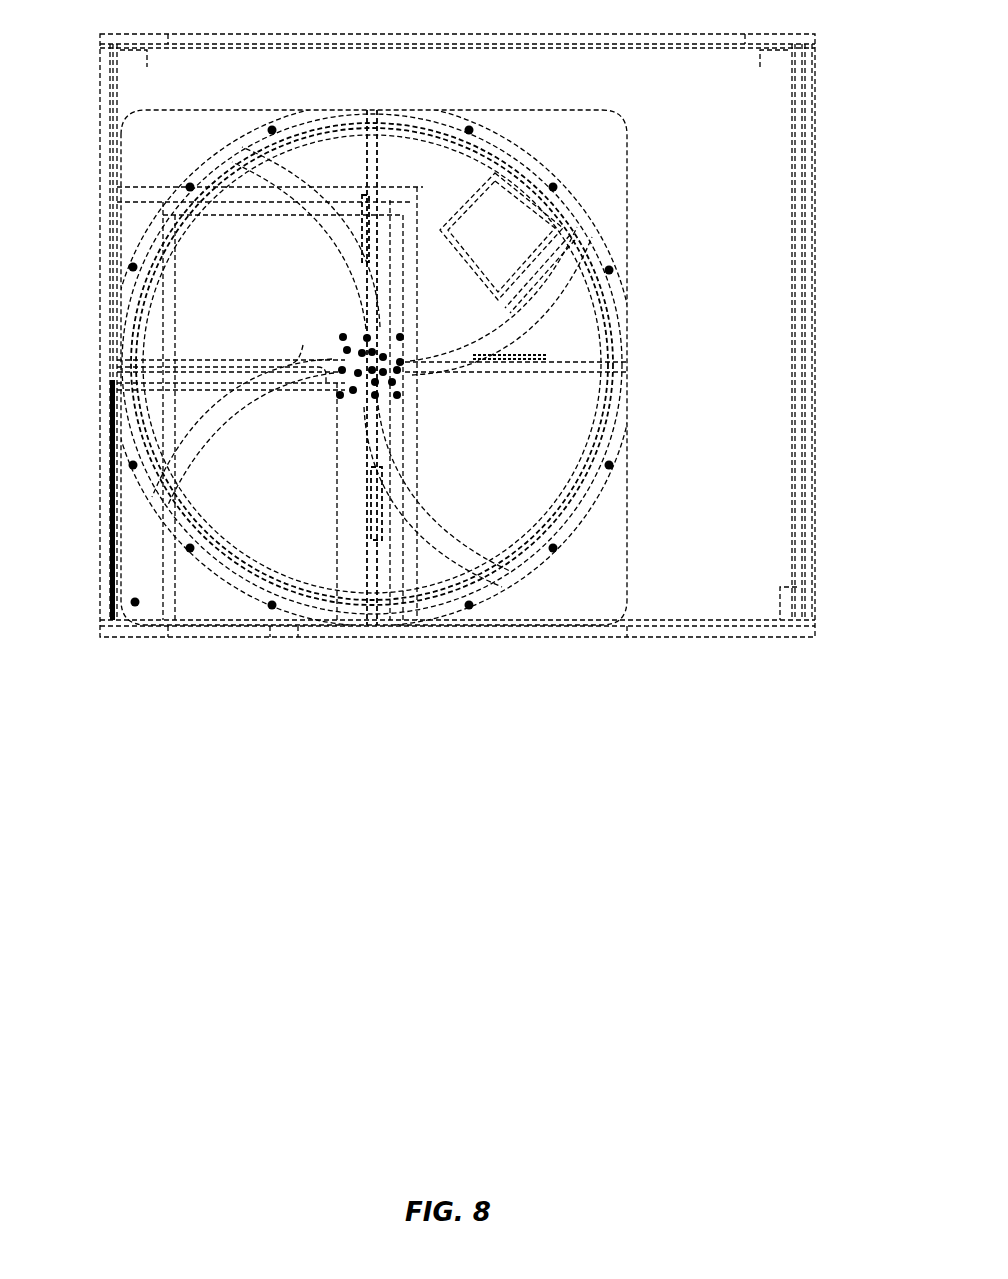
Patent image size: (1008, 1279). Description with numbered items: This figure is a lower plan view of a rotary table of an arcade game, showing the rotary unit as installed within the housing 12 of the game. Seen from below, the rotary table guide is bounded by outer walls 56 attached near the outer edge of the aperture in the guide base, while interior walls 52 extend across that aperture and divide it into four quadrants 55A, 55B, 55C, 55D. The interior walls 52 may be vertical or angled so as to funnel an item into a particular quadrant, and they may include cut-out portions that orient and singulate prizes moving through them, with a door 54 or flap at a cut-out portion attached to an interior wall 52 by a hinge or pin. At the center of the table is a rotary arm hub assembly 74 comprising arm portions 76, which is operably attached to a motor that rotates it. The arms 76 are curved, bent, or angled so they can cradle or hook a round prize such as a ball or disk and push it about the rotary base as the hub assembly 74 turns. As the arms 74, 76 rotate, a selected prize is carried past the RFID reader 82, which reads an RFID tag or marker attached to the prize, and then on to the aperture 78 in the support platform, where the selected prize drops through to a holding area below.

The housing 12 is at (808, 182).
The interior walls 52 is at (373, 165).
The door 54 is at (518, 357).
The first quadrant 55A is at (305, 480).
The quadrant 55B is at (512, 427).
The quadrant 55C is at (455, 185).
The quadrant 55D is at (255, 275).
The outer walls 56 is at (140, 302).
The rotary arm hub assembly 74 is at (355, 340).
The arm portions 76 is at (258, 178).
The aperture 78 is at (303, 345).
The RFID reader 82 is at (500, 212).